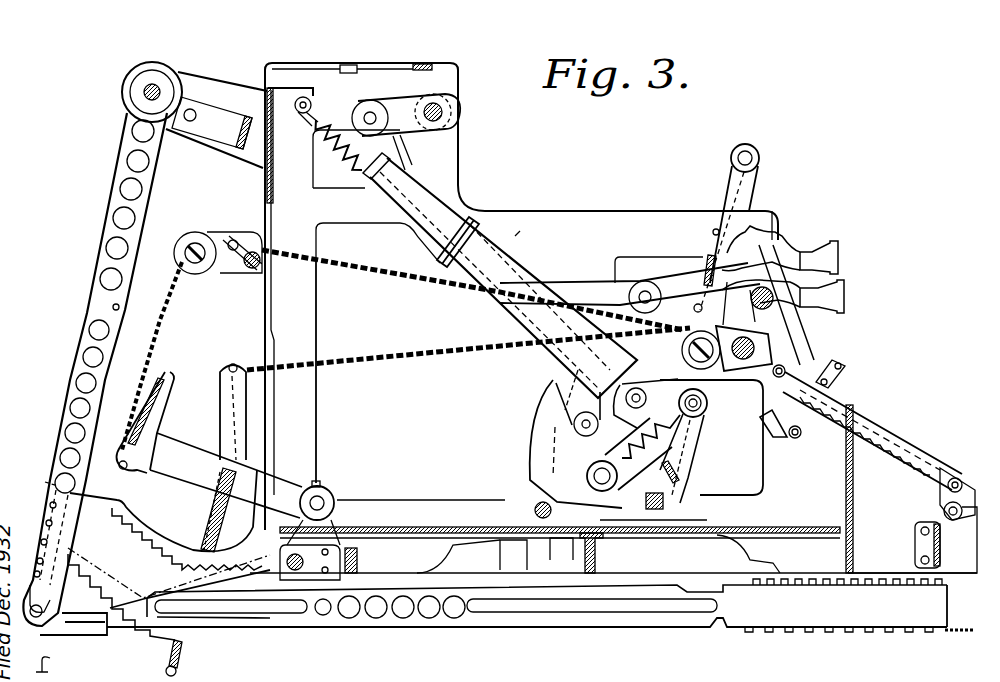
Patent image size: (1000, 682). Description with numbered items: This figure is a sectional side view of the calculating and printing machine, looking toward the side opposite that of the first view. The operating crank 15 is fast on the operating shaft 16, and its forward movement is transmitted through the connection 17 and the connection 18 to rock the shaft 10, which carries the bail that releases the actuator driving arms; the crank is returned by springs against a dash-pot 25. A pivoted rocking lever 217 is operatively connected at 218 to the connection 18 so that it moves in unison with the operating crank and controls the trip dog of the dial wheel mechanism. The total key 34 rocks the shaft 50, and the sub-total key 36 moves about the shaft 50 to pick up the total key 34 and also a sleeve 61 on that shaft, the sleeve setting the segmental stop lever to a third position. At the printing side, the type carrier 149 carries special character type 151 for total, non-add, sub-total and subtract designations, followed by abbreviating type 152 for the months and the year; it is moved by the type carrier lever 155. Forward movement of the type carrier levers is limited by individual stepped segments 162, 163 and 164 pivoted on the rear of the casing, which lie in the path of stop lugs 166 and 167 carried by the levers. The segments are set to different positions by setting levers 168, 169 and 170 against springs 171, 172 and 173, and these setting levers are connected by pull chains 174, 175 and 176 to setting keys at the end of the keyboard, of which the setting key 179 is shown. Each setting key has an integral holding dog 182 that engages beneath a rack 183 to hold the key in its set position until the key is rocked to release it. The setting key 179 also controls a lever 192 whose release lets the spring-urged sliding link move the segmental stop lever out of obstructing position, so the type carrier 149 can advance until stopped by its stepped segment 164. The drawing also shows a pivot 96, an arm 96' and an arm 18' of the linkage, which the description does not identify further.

The pivot shaft 96 is at (152, 78).
The arm 96' is at (216, 111).
The lever arm 18' is at (406, 104).
The shaft 10 is at (447, 110).
The operating crank 15 is at (737, 170).
The connection 218 is at (530, 229).
The rocking lever 217 is at (658, 278).
The total key 34 is at (837, 252).
The sub-total key 36 is at (844, 293).
The pull chain 176 is at (370, 270).
The pull chain 175 is at (365, 358).
The dash-pot 25 is at (503, 310).
The shaft 50 is at (770, 338).
The sleeve 61 is at (777, 350).
The setting key 179 is at (843, 366).
The type carrier lever 155 is at (78, 355).
The setting lever 168 is at (220, 372).
The setting lever 169 is at (227, 397).
The setting lever 170 is at (152, 425).
The pull chain 174 is at (280, 370).
The spring 172 is at (263, 462).
The connection 18 is at (503, 333).
The connection 17 is at (698, 444).
The operating shaft 16 is at (664, 500).
The lever 192 is at (772, 412).
The holding dog 182 is at (812, 448).
The rack 183 is at (888, 470).
The stop lug 167 is at (50, 493).
The spring 171 is at (213, 486).
The stop lug 166 is at (40, 553).
The stepped segment 164 is at (157, 515).
The stepped segment 163 is at (127, 583).
The spring 173 is at (196, 511).
The stepped segment 162 is at (137, 627).
The type carrier 149 is at (497, 620).
The abbreviating type 152 is at (802, 630).
The special character type 151 is at (922, 630).